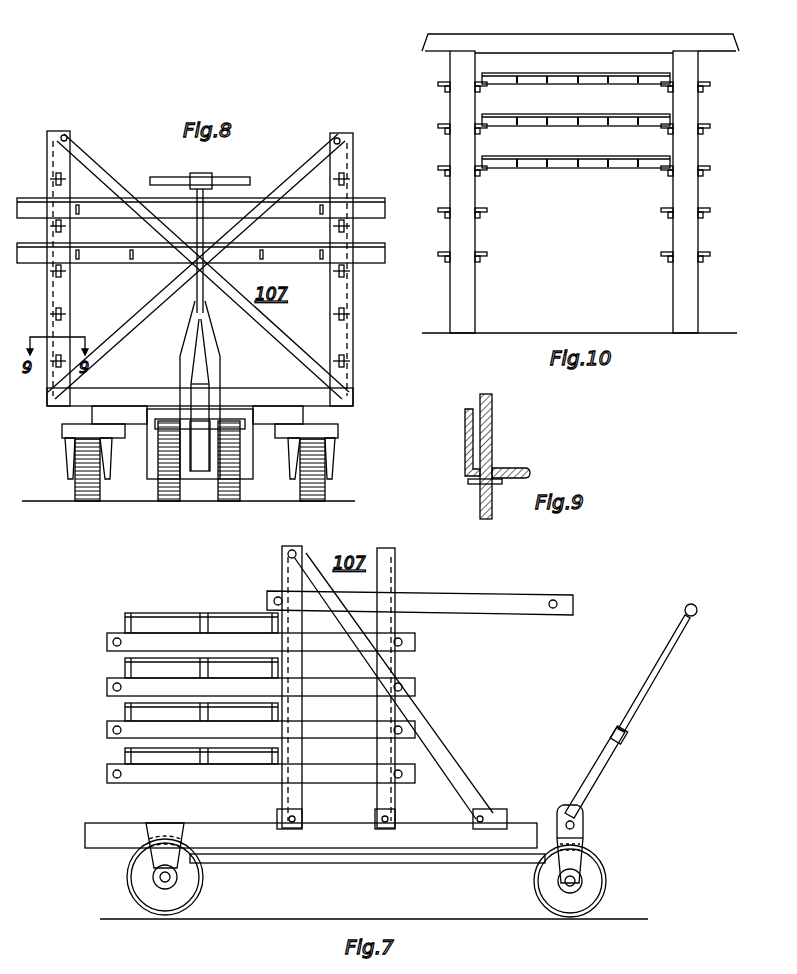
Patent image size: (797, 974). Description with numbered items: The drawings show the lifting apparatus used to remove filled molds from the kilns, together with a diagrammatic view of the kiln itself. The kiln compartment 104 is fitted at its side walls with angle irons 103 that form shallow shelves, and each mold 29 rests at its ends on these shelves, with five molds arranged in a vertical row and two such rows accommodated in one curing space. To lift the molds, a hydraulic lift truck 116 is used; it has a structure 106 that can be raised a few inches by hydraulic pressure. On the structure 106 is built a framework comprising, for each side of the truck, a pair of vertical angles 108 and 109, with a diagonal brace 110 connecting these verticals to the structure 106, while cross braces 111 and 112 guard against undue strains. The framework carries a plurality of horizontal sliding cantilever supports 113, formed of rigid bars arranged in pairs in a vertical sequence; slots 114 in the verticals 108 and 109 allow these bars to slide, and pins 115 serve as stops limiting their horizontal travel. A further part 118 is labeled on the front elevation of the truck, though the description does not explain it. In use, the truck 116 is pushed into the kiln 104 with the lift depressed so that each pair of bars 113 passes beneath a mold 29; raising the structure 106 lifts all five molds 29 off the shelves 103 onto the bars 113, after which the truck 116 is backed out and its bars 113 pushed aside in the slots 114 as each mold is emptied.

In FIG. 10, the mold 29 is at (645, 93).
In FIG. 7, the mold 29 is at (125, 620).
In FIG. 10, the angle irons 103 is at (484, 168).
In FIG. 10, the kiln compartment 104 is at (580, 183).
In FIG. 8, the structure 106 is at (305, 428).
In FIG. 7, the structure 106 is at (506, 812).
In FIG. 7, the vertical angle 108 is at (283, 578).
In FIG. 8, the vertical angle 109 is at (65, 158).
In FIG. 9, the vertical angle 109 is at (530, 470).
In FIG. 7, the vertical angle 109 is at (396, 556).
In FIG. 7, the diagonal brace 110 is at (445, 760).
In FIG. 8, the cross brace 111 is at (115, 168).
In FIG. 8, the cross brace 112 is at (292, 162).
In FIG. 8, the horizontal sliding cantilever support 113 is at (348, 186).
In FIG. 9, the horizontal sliding cantilever support 113 is at (493, 432).
In FIG. 7, the horizontal sliding cantilever support 113 is at (445, 612).
In FIG. 9, the slot 114 is at (494, 466).
In FIG. 8, the pin 115 is at (347, 274).
In FIG. 9, the pin 115 is at (497, 485).
In FIG. 7, the pin 115 is at (556, 600).
In FIG. 7, the hydraulic lift truck 116 is at (481, 866).
In FIG. 8, the steering fork 118 is at (351, 336).